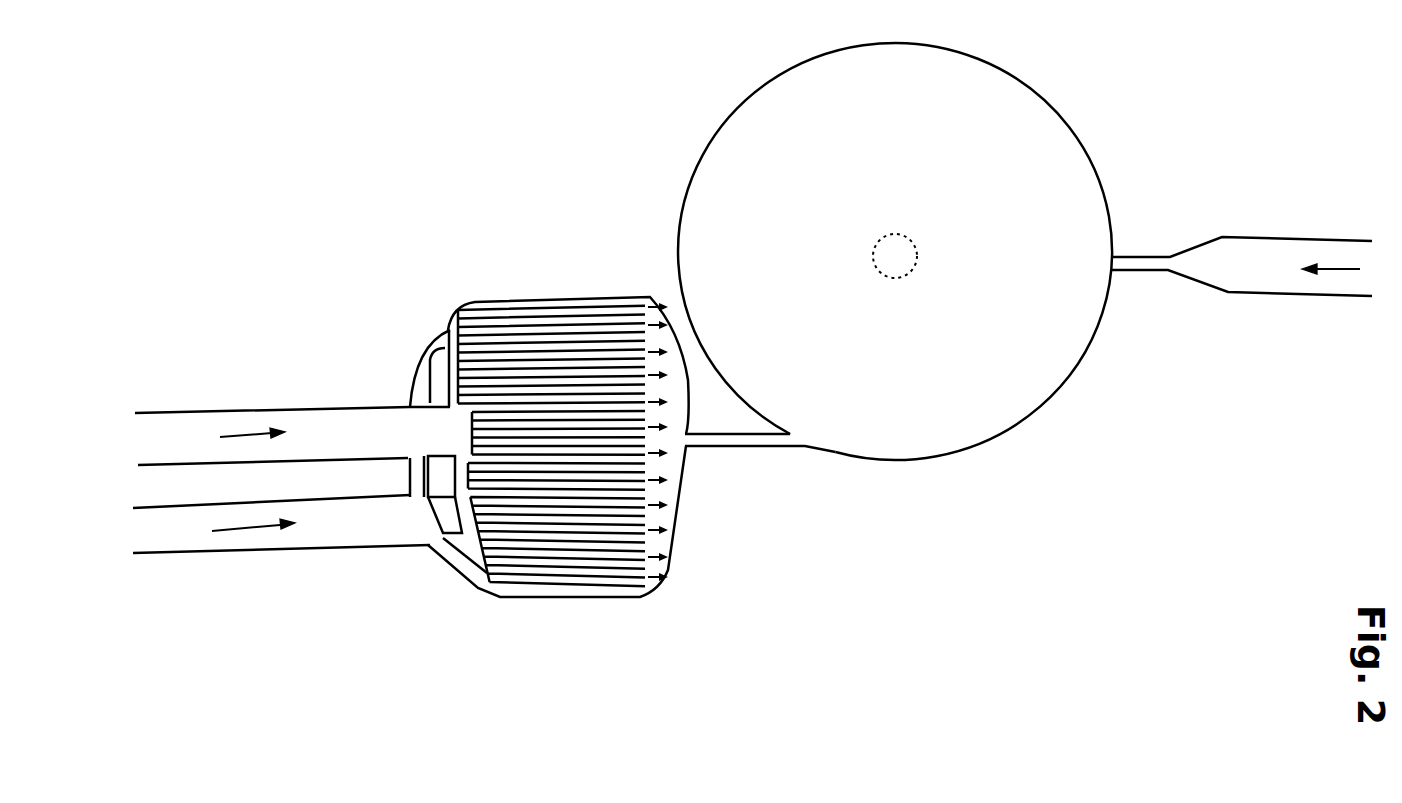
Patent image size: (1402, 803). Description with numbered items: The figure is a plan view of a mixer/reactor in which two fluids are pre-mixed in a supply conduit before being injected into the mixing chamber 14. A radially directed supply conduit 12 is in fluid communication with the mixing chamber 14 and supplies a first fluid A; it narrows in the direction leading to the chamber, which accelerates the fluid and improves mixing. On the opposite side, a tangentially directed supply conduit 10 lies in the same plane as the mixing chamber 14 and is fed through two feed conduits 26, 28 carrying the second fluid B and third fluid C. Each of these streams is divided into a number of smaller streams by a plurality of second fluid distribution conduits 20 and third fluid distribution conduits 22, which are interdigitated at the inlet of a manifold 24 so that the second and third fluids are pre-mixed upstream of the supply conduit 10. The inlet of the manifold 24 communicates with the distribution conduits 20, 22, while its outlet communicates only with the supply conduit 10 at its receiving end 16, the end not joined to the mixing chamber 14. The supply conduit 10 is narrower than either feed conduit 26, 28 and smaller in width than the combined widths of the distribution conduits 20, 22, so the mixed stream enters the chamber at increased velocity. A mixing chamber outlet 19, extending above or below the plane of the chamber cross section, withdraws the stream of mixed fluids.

The tangentially directed supply conduit 10 is at (611, 441).
The radially directed supply conduit 12 is at (1195, 261).
The mixing chamber 14 is at (925, 373).
The receiving end 16 is at (692, 458).
The mixing chamber outlet 19 is at (907, 236).
The second fluid distribution conduits 20 is at (516, 407).
The third fluid distribution conduits 22 is at (556, 484).
The manifold 24 is at (700, 538).
The feed conduit 26 is at (231, 406).
The feed conduit 28 is at (192, 524).